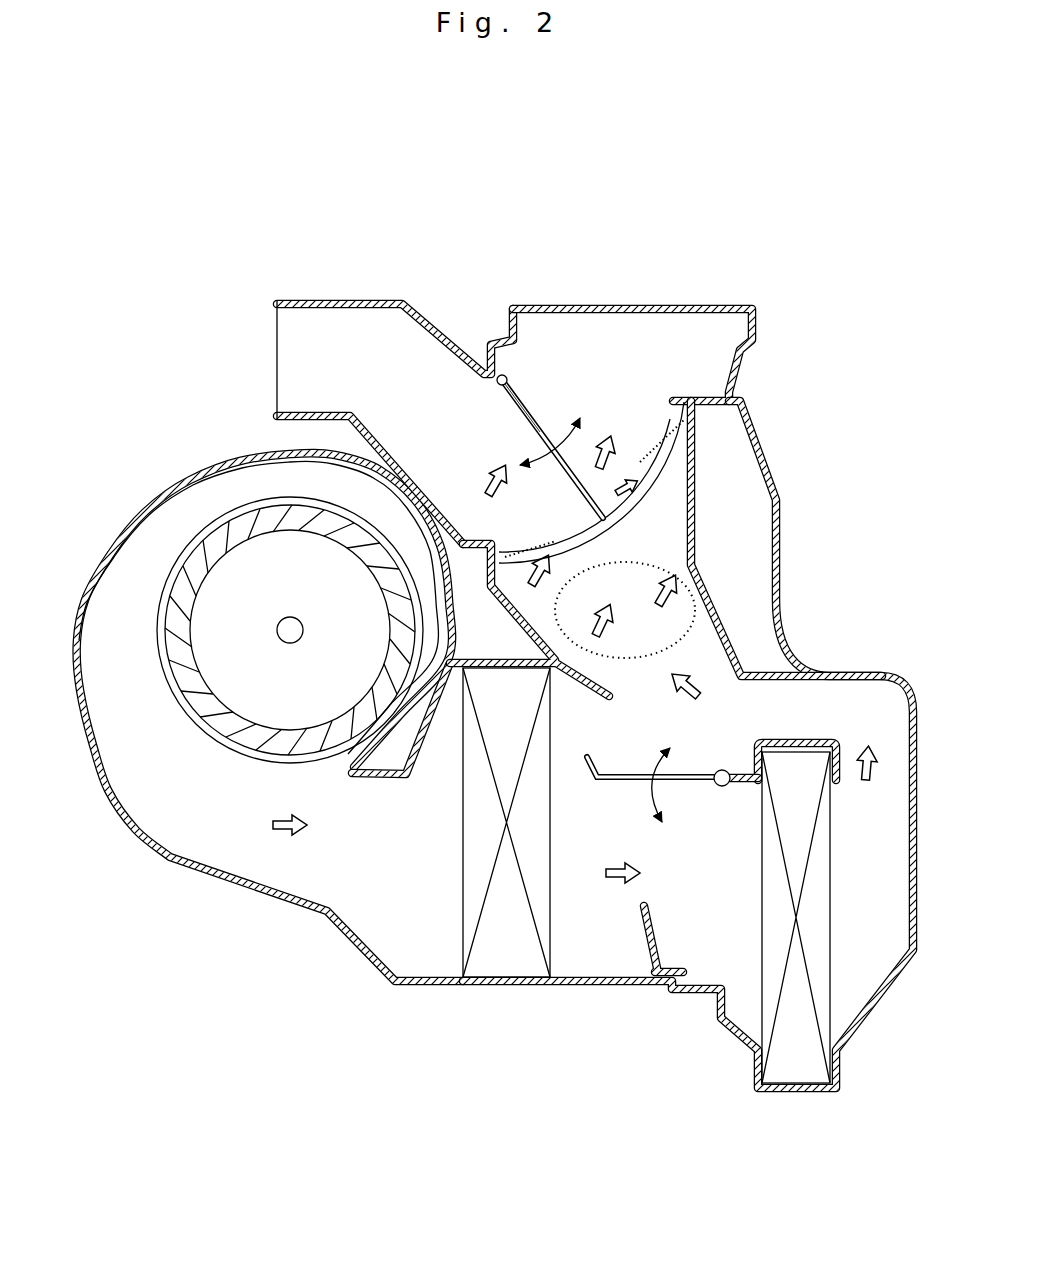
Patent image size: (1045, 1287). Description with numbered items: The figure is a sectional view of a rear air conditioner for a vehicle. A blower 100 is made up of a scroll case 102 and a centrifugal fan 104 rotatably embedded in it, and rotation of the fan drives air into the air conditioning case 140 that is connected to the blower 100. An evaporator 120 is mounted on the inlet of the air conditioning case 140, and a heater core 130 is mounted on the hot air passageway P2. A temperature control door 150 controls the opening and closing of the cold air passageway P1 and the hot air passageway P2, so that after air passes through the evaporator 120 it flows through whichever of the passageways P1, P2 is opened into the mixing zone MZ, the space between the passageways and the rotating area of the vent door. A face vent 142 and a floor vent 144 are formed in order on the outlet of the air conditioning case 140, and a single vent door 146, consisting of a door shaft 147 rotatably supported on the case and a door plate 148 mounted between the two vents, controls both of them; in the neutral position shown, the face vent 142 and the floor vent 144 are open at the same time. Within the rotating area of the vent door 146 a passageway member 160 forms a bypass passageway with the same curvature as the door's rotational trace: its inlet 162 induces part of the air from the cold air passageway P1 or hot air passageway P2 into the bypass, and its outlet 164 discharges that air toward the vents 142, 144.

The blower 100 is at (150, 478).
The scroll case 102 is at (232, 454).
The centrifugal fan 104 is at (254, 738).
The evaporator 120 is at (510, 955).
The heater core 130 is at (788, 1072).
The air conditioning case 140 is at (860, 668).
The face vent 142 is at (292, 342).
The floor vent 144 is at (606, 326).
The vent door 146 is at (531, 405).
The door shaft 147 is at (496, 380).
The door plate 148 is at (514, 405).
The temperature control door 150 is at (615, 784).
The passageway member 160 is at (574, 530).
The inlet 162 is at (510, 553).
The outlet 164 is at (660, 450).
The mixing zone MZ is at (625, 610).
The cold air passageway P1 is at (614, 748).
The hot air passageway P2 is at (859, 850).